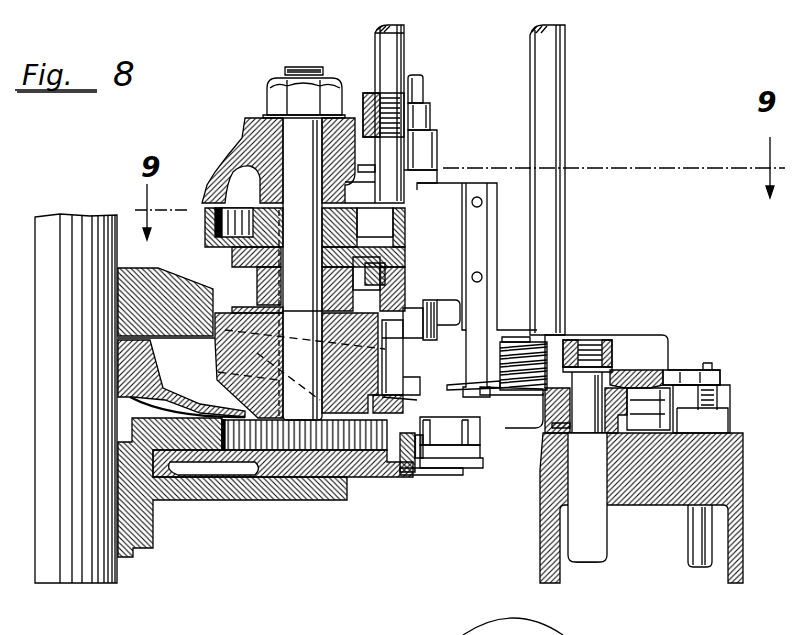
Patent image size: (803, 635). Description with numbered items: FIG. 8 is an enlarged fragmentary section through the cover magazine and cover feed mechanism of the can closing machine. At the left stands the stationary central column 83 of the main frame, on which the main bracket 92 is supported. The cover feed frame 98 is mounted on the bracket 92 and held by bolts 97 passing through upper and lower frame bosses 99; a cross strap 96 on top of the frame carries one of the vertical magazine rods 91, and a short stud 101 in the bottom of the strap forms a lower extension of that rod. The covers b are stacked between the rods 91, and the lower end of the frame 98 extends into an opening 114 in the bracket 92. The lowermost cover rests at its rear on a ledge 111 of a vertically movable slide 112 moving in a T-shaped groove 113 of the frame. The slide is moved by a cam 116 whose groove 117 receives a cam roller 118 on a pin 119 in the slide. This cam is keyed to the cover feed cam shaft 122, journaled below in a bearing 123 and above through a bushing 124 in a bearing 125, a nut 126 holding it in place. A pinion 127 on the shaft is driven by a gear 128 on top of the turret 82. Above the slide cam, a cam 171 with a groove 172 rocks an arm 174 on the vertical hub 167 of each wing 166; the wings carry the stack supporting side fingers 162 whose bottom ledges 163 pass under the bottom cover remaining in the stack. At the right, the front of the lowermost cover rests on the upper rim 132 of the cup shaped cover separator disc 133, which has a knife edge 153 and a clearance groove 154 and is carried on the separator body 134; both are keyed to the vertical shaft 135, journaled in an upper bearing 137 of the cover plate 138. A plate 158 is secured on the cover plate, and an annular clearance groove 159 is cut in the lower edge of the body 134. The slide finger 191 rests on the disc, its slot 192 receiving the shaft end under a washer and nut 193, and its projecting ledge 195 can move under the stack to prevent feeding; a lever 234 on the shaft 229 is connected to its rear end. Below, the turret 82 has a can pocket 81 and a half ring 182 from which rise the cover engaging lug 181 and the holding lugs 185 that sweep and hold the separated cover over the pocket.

The central column 83 is at (53, 223).
The main bracket 92 is at (163, 276).
The cover feed frame 98 is at (220, 351).
The bearing 123 is at (224, 372).
The bushing 124 is at (295, 140).
The nut 126 is at (279, 83).
The bearing 125 is at (262, 119).
The cover feed cam shaft 122 is at (273, 127).
The groove 172 is at (233, 214).
The cam 171 is at (207, 232).
The cam 116 is at (232, 258).
The groove 117 is at (246, 275).
The opening 114 is at (236, 296).
The arm 174 is at (363, 248).
The cam roller 118 is at (383, 262).
The pin 119 is at (390, 270).
The vertical rods 91 is at (405, 42).
The cross strap 96 is at (370, 94).
The bolts 97 is at (424, 86).
The frame bosses 99 is at (438, 141).
The vertical hub 167 is at (440, 176).
The short stud 101 is at (405, 197).
The wings 166 is at (493, 236).
The stack supporting side fingers 162 is at (480, 295).
The slide 112 is at (397, 352).
The T-shaped groove 113 is at (403, 367).
The bottom ledges 163 is at (480, 380).
The covers b is at (517, 342).
The ledge 111 is at (403, 409).
The pinion 127 is at (303, 452).
The gear 128 is at (197, 440).
The turret 82 is at (400, 470).
The half ring 182 is at (418, 466).
The can pocket 81 is at (437, 478).
The holding lugs 185 is at (451, 434).
The cover engaging lug 181 is at (466, 434).
The washer and nut 193 is at (597, 340).
The vertical shaft 135 is at (580, 543).
The slot 192 is at (633, 375).
The slide finger 191 is at (686, 376).
The lever 234 is at (730, 408).
The knife edge 153 is at (628, 392).
The clearance groove 154 is at (628, 404).
The plate 158 is at (632, 418).
The upper rim 132 is at (542, 394).
The projecting ledge 195 is at (531, 416).
The cover separator disc 133 is at (540, 432).
The separator body 134 is at (543, 431).
The annular clearance groove 159 is at (547, 455).
The upper bearing 137 is at (547, 478).
The cover plate 138 is at (747, 533).
The shaft 229 is at (695, 546).